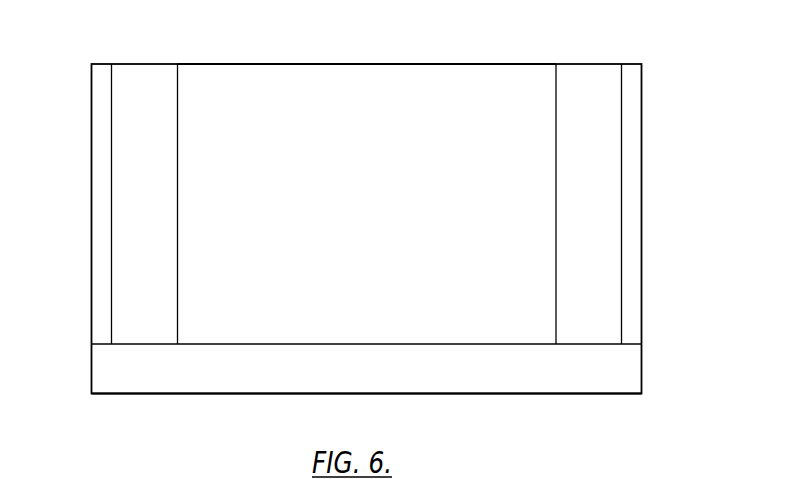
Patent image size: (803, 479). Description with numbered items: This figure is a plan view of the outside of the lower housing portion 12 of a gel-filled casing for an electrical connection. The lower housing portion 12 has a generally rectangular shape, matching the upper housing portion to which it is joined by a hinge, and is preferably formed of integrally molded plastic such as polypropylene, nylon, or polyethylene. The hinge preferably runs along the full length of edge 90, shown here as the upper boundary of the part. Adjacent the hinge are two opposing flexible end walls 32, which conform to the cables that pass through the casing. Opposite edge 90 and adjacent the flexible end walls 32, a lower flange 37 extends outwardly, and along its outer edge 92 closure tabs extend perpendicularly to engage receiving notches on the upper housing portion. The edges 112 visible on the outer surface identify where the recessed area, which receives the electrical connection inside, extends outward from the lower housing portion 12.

The lower housing portion 12 is at (643, 40).
The flexible end walls 32 is at (92, 257).
The lower flange 37 is at (628, 373).
The edge 90 is at (470, 63).
The outer edge 92 is at (103, 397).
The edges 112 is at (177, 100).